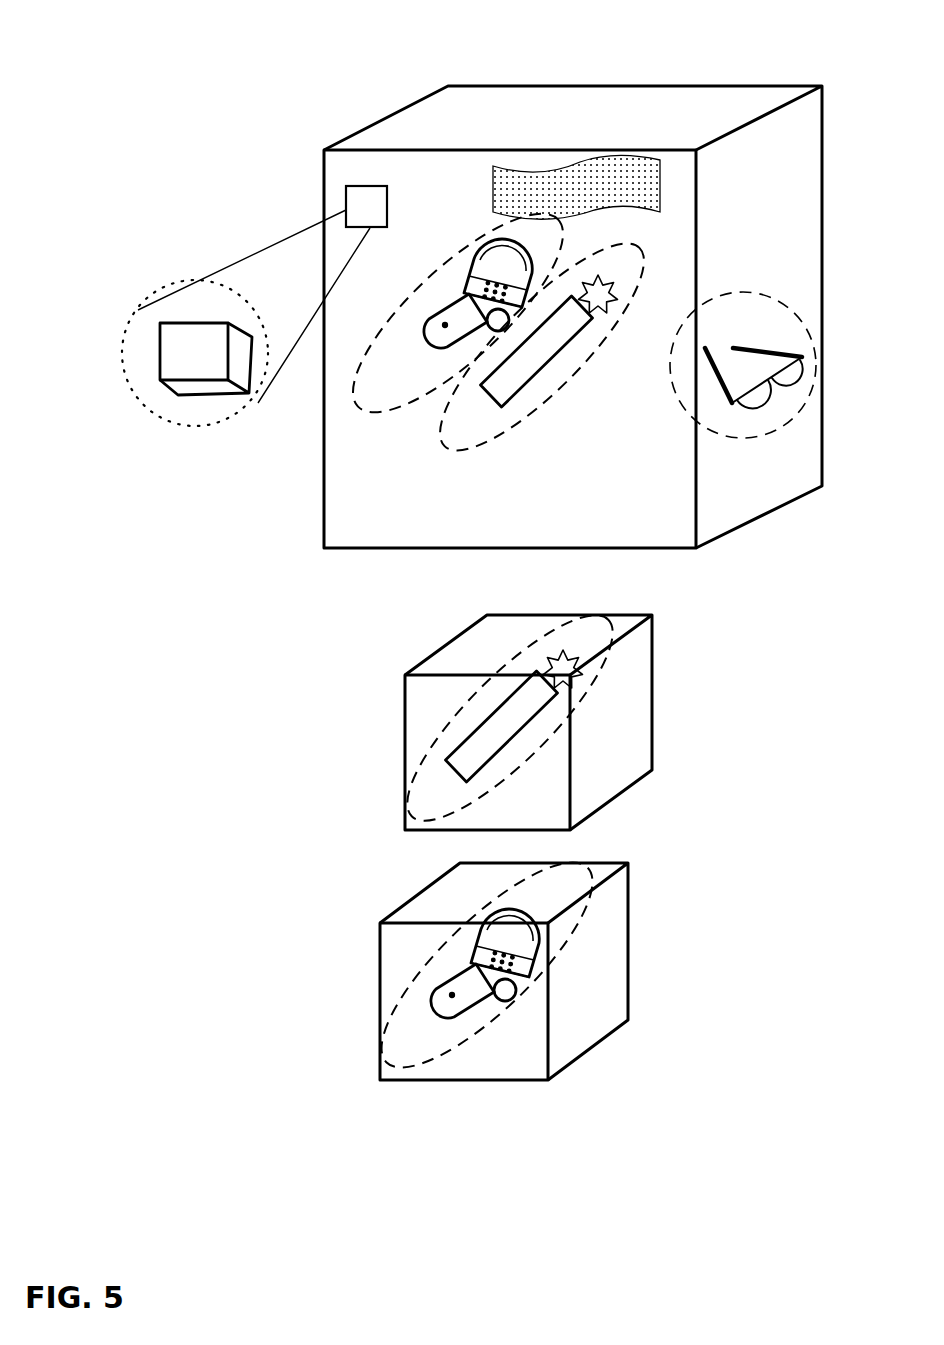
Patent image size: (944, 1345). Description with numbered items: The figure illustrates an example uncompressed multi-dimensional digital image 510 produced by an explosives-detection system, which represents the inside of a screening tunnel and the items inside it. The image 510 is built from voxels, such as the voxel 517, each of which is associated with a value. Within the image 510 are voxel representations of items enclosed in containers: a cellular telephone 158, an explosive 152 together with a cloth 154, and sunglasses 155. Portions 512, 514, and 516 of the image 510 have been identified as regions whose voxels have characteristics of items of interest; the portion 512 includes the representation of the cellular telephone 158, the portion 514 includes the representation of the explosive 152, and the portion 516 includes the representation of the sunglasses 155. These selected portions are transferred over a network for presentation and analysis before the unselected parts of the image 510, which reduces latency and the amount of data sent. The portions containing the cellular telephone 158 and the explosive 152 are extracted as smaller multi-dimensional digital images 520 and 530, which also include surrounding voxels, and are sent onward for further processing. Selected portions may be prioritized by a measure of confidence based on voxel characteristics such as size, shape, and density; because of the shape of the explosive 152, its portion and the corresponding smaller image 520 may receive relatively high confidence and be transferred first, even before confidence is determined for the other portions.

The uncompressed multi-dimensional digital image 510 is at (663, 86).
The cloth 154 is at (576, 187).
The portion 512 is at (373, 418).
The portion 514 is at (490, 433).
The cellular telephone 158 is at (440, 292).
The explosive 152 is at (543, 349).
The portion 516 is at (750, 294).
The sunglasses 155 is at (823, 363).
The voxel 517 is at (254, 306).
The smaller multi-dimensional digital image 520 is at (405, 700).
The smaller multi-dimensional digital image 530 is at (380, 966).